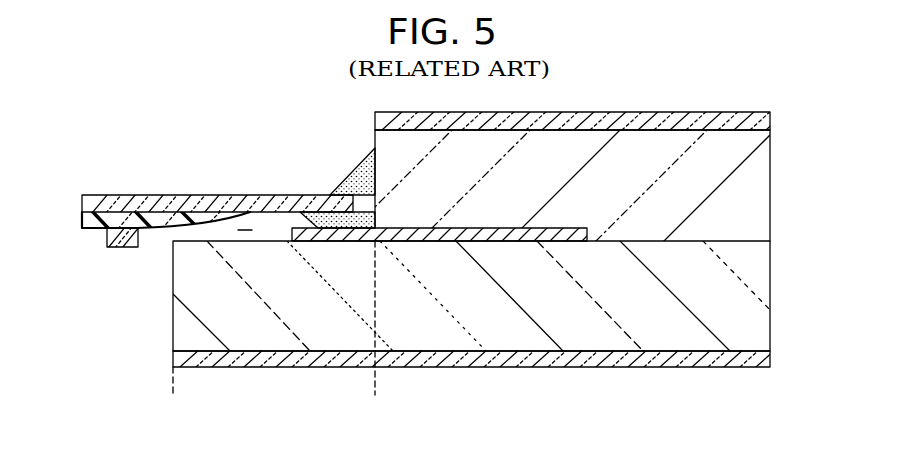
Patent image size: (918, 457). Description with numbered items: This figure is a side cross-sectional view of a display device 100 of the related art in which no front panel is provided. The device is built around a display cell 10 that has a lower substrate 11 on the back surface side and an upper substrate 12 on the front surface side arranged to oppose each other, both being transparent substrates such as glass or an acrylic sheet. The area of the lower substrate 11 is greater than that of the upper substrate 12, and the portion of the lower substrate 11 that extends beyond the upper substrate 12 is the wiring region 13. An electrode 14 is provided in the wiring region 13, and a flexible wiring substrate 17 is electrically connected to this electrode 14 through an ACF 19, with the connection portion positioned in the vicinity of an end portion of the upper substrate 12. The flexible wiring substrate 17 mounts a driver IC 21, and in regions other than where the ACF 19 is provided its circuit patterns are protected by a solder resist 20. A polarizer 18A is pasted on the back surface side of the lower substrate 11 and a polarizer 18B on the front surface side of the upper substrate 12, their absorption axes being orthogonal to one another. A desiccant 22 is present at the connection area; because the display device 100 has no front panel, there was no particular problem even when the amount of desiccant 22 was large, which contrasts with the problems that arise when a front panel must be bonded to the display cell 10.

The display device 100 is at (597, 70).
The display cell 10 is at (848, 112).
The lower substrate 11 is at (736, 314).
The upper substrate 12 is at (742, 190).
The wiring region 13 is at (375, 397).
The electrode 14 is at (573, 228).
The flexible wiring substrate 17 is at (90, 203).
The polarizer 18A is at (736, 359).
The polarizer 18B is at (742, 122).
The ACF 19 is at (245, 214).
The solder resist 20 is at (90, 222).
The driver IC 21 is at (112, 237).
The desiccant 22 is at (357, 164).